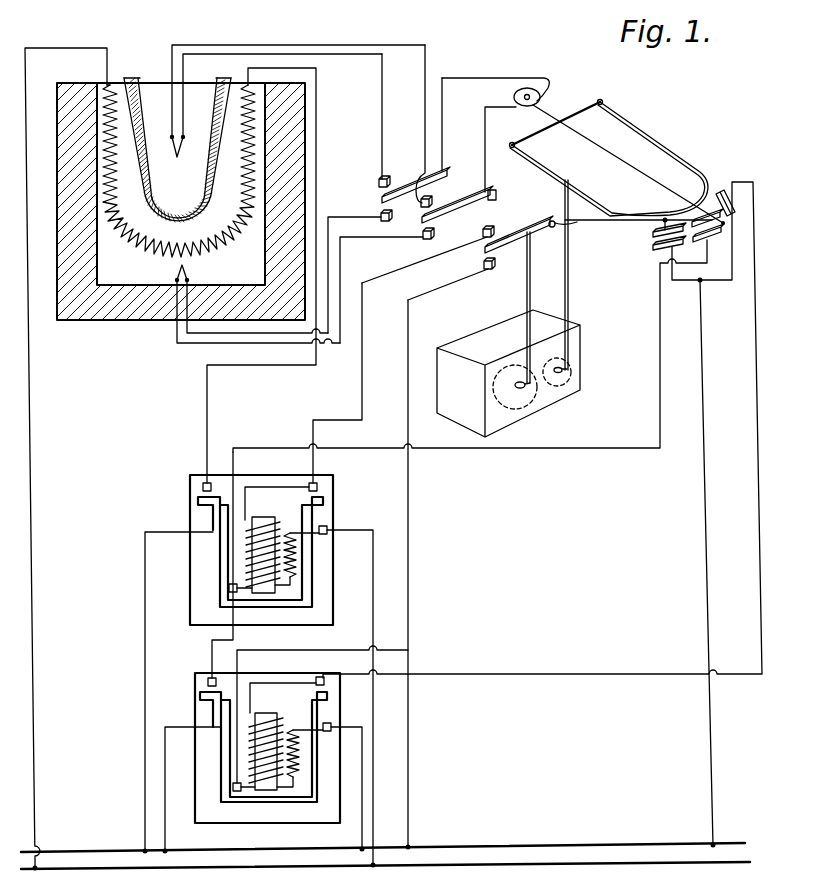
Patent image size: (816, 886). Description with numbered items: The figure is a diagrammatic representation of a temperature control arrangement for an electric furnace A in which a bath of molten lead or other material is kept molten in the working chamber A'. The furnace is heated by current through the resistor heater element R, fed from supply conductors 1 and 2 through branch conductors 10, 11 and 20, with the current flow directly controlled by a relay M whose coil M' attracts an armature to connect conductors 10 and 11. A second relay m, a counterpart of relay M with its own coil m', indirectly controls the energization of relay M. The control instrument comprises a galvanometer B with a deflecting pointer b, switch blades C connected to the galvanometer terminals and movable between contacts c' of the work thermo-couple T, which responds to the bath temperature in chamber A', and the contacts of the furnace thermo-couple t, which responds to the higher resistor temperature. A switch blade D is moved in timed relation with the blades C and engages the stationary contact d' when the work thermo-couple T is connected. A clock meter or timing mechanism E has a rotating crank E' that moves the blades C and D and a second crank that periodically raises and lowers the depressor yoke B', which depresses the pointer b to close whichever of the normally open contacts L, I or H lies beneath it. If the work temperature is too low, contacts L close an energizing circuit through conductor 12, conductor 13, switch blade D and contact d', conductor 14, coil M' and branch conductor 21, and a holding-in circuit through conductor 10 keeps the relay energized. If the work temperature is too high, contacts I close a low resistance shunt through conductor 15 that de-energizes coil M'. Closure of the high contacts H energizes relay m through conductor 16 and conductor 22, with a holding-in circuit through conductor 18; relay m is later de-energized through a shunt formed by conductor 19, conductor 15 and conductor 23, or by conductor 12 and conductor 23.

The electric furnace A is at (181, 220).
The working chamber A' is at (177, 150).
The work thermo-couple T is at (170, 153).
The furnace thermo-couple t is at (178, 272).
The resistor heater element R is at (254, 134).
The galvanometer B is at (515, 86).
The depressor yoke B' is at (609, 230).
The deflecting pointer b is at (640, 163).
The switch blades C is at (468, 200).
The contacts c' is at (414, 126).
The switch blade D is at (513, 240).
The stationary switch contact d' is at (428, 254).
The clock meter or timing mechanism E is at (527, 334).
The rotating crank E' is at (532, 397).
The high contacts H is at (720, 192).
The intermediate contacts I is at (706, 240).
The low contacts L is at (658, 248).
The relay M is at (234, 550).
The coil M' is at (217, 555).
The second relay m is at (242, 748).
The coil m' is at (193, 751).
The supply conductor 1 is at (71, 851).
The supply conductor 2 is at (104, 868).
The branch conductor 10 is at (144, 700).
The conductor 11 is at (205, 392).
The branch conductor 12 is at (706, 525).
The conductor 13 is at (590, 223).
The conductor 14 is at (364, 349).
The conductor 15 is at (527, 452).
The conductor 16 is at (757, 480).
The conductor 18 is at (168, 730).
The conductor 19 is at (210, 645).
The branch conductor 20 is at (33, 412).
The branch conductor 21 is at (376, 607).
The conductor 22 is at (365, 737).
The conductor 23 is at (411, 497).